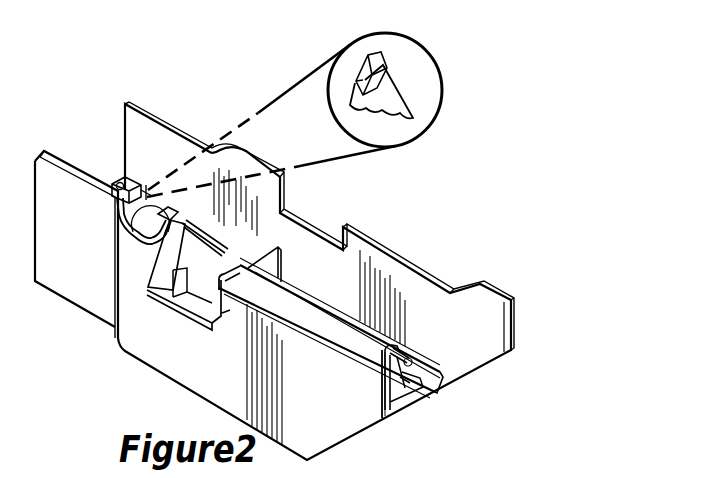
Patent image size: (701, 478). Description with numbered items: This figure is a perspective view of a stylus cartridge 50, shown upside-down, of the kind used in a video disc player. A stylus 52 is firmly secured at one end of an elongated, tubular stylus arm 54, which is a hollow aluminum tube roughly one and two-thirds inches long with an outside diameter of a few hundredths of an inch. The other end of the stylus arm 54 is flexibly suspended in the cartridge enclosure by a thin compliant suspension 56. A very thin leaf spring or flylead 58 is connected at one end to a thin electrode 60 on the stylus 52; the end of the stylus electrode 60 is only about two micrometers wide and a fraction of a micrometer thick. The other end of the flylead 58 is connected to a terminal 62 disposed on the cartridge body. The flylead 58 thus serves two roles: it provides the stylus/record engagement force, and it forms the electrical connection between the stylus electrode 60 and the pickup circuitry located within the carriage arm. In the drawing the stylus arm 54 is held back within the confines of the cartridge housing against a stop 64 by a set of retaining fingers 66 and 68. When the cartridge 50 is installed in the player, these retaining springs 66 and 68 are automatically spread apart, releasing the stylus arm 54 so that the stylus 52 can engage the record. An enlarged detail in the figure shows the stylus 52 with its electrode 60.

The stylus cartridge 50 is at (465, 226).
The stylus 52 is at (405, 92).
The stylus arm 54 is at (356, 338).
The compliant suspension 56 is at (398, 402).
The flylead 58 is at (137, 243).
The stylus electrode 60 is at (365, 74).
The terminal 62 is at (120, 183).
The stop 64 is at (280, 267).
The retaining finger 66 is at (165, 280).
The retaining finger 68 is at (203, 204).